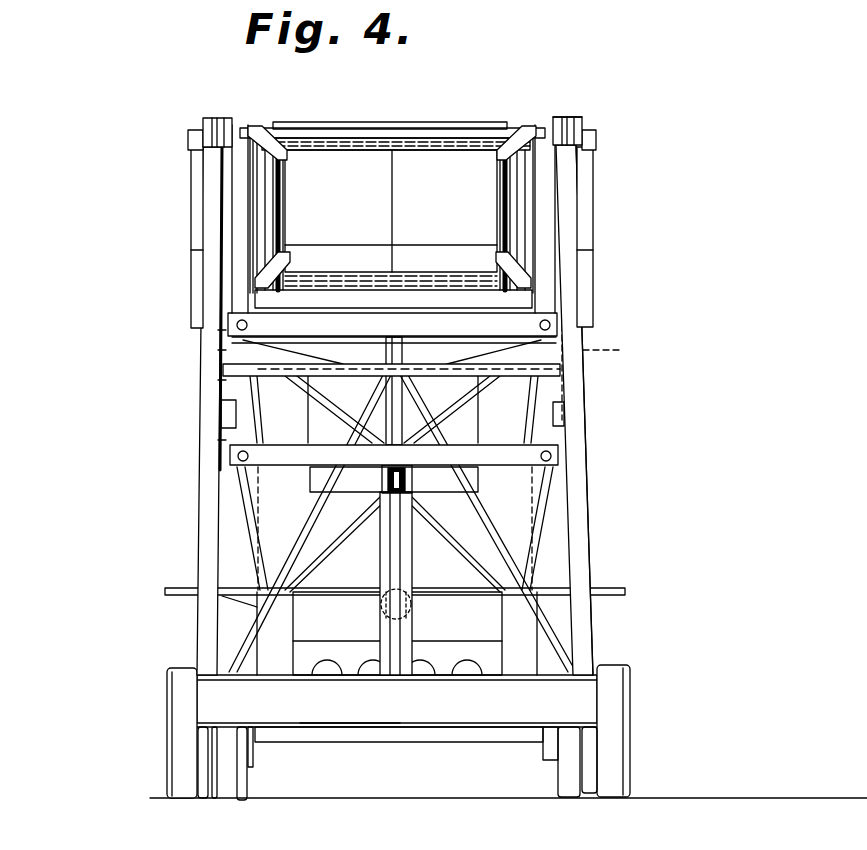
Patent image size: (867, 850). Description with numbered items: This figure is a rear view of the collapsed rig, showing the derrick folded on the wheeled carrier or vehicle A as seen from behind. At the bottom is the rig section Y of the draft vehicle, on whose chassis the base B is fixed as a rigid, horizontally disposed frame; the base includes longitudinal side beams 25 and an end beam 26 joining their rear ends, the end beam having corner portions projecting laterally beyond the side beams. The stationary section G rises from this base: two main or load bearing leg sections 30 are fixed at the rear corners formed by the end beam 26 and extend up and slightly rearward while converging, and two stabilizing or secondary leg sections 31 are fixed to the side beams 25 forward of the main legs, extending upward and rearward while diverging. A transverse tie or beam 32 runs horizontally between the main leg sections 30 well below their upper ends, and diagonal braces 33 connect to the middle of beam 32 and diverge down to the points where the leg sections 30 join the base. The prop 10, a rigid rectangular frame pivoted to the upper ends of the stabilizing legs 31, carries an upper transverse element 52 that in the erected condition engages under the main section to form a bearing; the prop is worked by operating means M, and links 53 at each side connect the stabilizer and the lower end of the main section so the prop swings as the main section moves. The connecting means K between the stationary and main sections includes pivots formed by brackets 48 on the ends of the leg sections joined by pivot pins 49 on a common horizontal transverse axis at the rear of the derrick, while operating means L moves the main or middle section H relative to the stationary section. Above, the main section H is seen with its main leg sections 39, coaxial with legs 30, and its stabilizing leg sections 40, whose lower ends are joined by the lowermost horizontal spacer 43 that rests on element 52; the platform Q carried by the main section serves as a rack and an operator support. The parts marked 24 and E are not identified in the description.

The prop 10 is at (283, 464).
The wheel 24 is at (183, 753).
The side beams 25 is at (297, 623).
The end beam 26 is at (348, 713).
The main leg sections 30 is at (202, 537).
The stabilizing leg sections 31 is at (252, 536).
The transverse tie or beam 32 is at (340, 364).
The diagonal braces 33 is at (488, 518).
The main leg sections of main section 39 is at (267, 130).
The stabilizing leg sections of main section 40 is at (293, 260).
The lowermost horizontal spacer 43 is at (392, 324).
The brackets 48 is at (225, 121).
The pivot pins 49 is at (190, 138).
The upper transverse element of prop 52 is at (394, 455).
The links 53 is at (222, 392).
The wheeled carrier or vehicle A is at (510, 738).
The base B is at (397, 701).
The frame section E is at (508, 408).
The stationary section G is at (590, 520).
The main or middle section H is at (290, 191).
The connecting means K is at (577, 117).
The operating means for main section L is at (413, 578).
The operating means for prop M is at (392, 562).
The platform Q is at (480, 127).
The rig section of draft vehicle Y is at (627, 694).